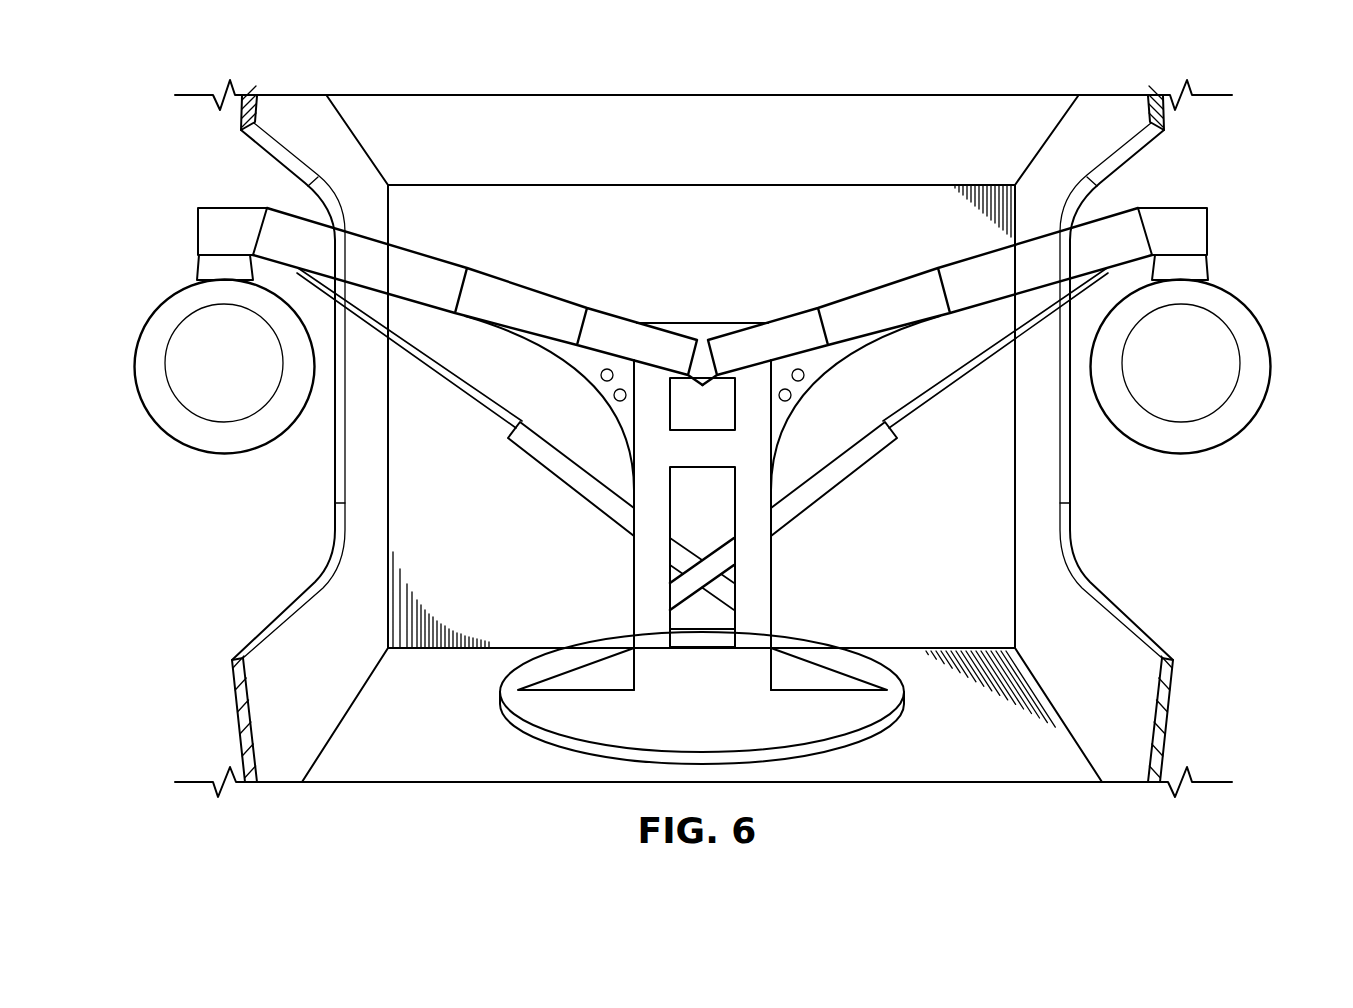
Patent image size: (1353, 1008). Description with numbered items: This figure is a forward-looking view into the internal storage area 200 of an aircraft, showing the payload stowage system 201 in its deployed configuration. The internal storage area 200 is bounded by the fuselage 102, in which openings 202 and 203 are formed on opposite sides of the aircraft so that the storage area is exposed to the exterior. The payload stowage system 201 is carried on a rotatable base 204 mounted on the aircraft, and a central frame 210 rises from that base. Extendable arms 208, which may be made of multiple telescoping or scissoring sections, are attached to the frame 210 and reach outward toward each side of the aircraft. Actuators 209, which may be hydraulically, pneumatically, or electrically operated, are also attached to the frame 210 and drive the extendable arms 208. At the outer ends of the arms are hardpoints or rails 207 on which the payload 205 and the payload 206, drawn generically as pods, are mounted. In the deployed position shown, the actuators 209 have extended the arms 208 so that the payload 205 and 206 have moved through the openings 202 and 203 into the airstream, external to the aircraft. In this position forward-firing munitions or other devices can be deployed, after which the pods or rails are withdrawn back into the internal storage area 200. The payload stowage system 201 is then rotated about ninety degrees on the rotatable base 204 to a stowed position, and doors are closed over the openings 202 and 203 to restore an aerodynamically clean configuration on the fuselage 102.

The fuselage 102 is at (1168, 698).
The internal storage area 200 is at (450, 165).
The payload stowage system 201 is at (716, 287).
The opening 202 is at (325, 562).
The opening 203 is at (1079, 562).
The rotatable base 204 is at (587, 647).
The payload 205 is at (163, 430).
The payload 206 is at (1242, 430).
The hardpoints or rails 207 is at (218, 218).
The extendable arms 208 is at (529, 288).
The actuators 209 is at (549, 474).
The frame 210 is at (641, 566).